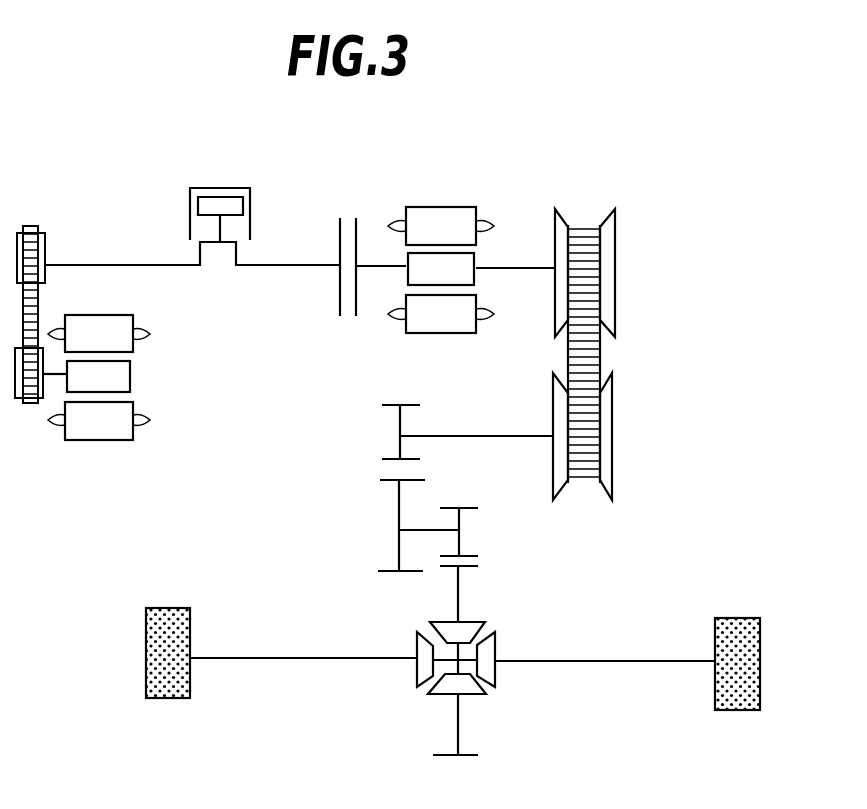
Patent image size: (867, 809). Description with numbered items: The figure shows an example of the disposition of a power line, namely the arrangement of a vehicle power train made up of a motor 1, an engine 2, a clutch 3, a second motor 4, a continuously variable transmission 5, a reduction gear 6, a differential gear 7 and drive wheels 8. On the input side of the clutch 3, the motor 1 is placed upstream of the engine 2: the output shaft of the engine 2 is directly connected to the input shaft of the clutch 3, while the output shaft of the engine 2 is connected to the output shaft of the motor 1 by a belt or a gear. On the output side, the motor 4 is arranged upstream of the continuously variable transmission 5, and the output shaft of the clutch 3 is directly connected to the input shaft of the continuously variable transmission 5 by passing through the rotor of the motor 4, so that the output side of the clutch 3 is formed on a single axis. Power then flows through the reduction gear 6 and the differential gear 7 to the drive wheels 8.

The motor 1 is at (112, 430).
The engine 2 is at (227, 188).
The clutch 3 is at (352, 316).
The motor 4 is at (450, 207).
The continuously variable transmission 5 is at (601, 365).
The reduction gear 6 is at (388, 517).
The differential gear 7 is at (490, 693).
The drive wheels 8 is at (805, 661).